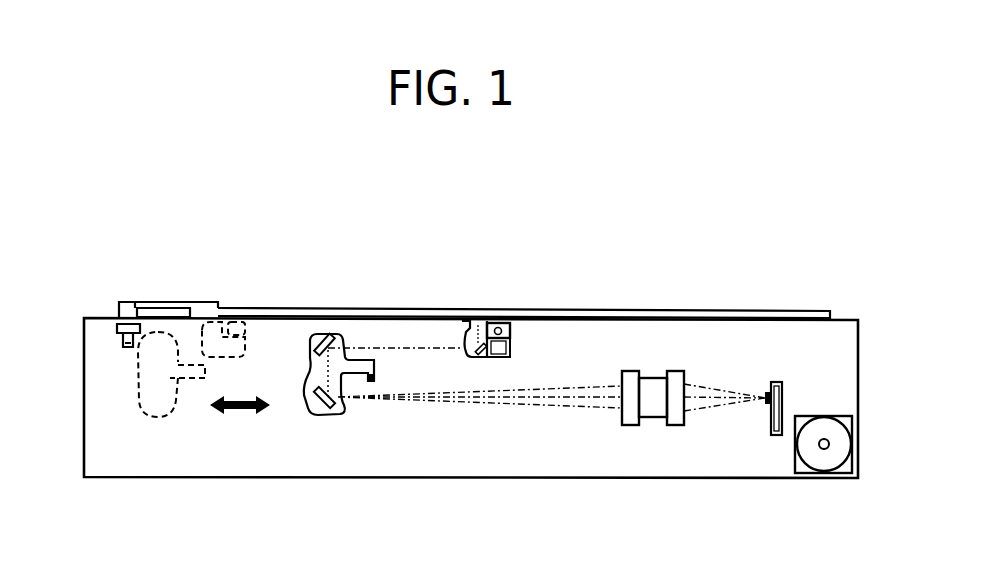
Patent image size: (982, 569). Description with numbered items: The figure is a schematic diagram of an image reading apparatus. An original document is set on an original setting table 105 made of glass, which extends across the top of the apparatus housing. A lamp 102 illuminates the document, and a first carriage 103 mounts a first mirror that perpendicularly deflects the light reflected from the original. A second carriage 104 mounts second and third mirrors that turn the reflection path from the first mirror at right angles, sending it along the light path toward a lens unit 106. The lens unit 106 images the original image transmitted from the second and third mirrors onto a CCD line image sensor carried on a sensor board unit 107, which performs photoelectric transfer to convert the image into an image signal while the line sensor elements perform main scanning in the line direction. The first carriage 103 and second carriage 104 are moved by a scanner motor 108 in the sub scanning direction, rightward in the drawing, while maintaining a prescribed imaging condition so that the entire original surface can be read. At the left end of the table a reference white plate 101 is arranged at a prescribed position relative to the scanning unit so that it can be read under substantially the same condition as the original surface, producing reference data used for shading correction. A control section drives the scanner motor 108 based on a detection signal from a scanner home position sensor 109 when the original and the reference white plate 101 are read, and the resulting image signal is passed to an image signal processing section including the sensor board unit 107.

The reference white plate 101 is at (167, 302).
The lamp 102 is at (498, 323).
The first carriage 103 is at (476, 321).
The second carriage 104 is at (327, 333).
The original setting table 105 is at (663, 310).
The lens unit 106 is at (653, 419).
The sensor board unit 107 is at (776, 381).
The scanner motor 108 is at (822, 474).
The scanner home position sensor 109 is at (128, 349).